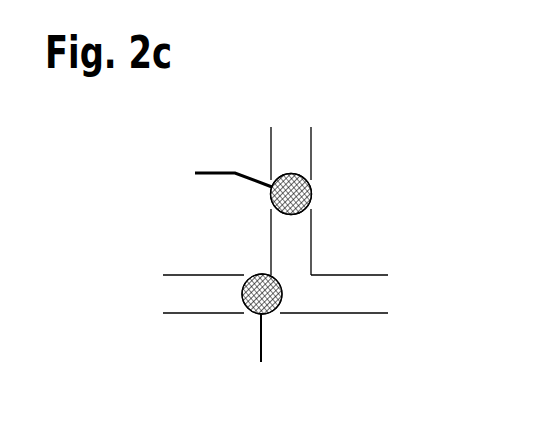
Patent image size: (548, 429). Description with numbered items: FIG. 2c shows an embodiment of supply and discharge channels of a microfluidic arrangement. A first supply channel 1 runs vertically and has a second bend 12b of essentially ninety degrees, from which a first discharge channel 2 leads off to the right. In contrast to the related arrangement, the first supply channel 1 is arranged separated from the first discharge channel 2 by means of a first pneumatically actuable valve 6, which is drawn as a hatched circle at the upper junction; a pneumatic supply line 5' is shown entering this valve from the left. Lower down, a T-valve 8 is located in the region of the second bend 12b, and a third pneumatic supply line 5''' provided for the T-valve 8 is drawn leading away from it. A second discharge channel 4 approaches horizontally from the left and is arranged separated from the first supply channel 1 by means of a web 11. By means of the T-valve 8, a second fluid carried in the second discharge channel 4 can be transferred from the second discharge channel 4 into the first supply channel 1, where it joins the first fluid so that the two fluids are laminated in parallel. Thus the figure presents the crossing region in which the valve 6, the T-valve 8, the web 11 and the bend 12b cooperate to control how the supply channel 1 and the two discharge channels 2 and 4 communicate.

The first supply channel 1 is at (288, 143).
The first discharge channel 2 is at (383, 296).
The second discharge channel 4 is at (178, 297).
The pneumatic supply line 5' is at (233, 139).
The third pneumatic supply line 5''' is at (310, 356).
The first pneumatically actuable valve 6 is at (316, 197).
The T-valve 8 is at (258, 277).
The web 11 is at (252, 316).
The second bend 12b is at (279, 305).